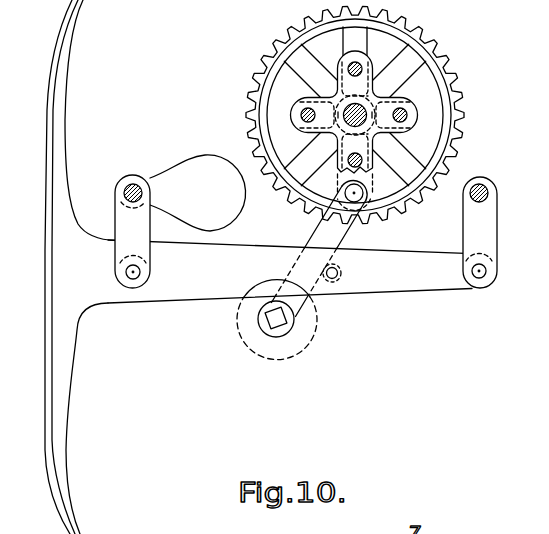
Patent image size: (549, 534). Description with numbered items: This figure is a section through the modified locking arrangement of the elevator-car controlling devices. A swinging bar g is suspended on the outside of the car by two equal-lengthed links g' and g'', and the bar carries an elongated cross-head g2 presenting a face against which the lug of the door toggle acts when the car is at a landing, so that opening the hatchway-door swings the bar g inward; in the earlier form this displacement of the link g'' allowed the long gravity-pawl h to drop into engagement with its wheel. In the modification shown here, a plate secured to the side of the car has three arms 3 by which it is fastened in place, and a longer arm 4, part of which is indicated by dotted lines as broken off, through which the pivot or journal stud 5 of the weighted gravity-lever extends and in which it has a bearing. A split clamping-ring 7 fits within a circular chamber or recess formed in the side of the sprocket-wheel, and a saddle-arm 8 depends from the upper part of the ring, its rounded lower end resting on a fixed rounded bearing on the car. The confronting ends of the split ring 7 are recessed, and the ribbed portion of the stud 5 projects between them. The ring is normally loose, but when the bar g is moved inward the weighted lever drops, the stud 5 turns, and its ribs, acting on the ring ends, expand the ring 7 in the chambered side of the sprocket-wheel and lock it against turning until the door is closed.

The arms 3 is at (343, 63).
The longer arm 4 is at (368, 155).
The pivot or journal stud 5 is at (368, 188).
The split clamping-ring 7 is at (393, 34).
The saddle-arm 8 is at (362, 44).
The bar g is at (290, 289).
The link g' is at (132, 231).
The link g'' is at (460, 232).
The elongated cross-head g2 is at (58, 108).
The gravity-pawl h is at (341, 290).
The boss of pitman rod h' is at (302, 269).